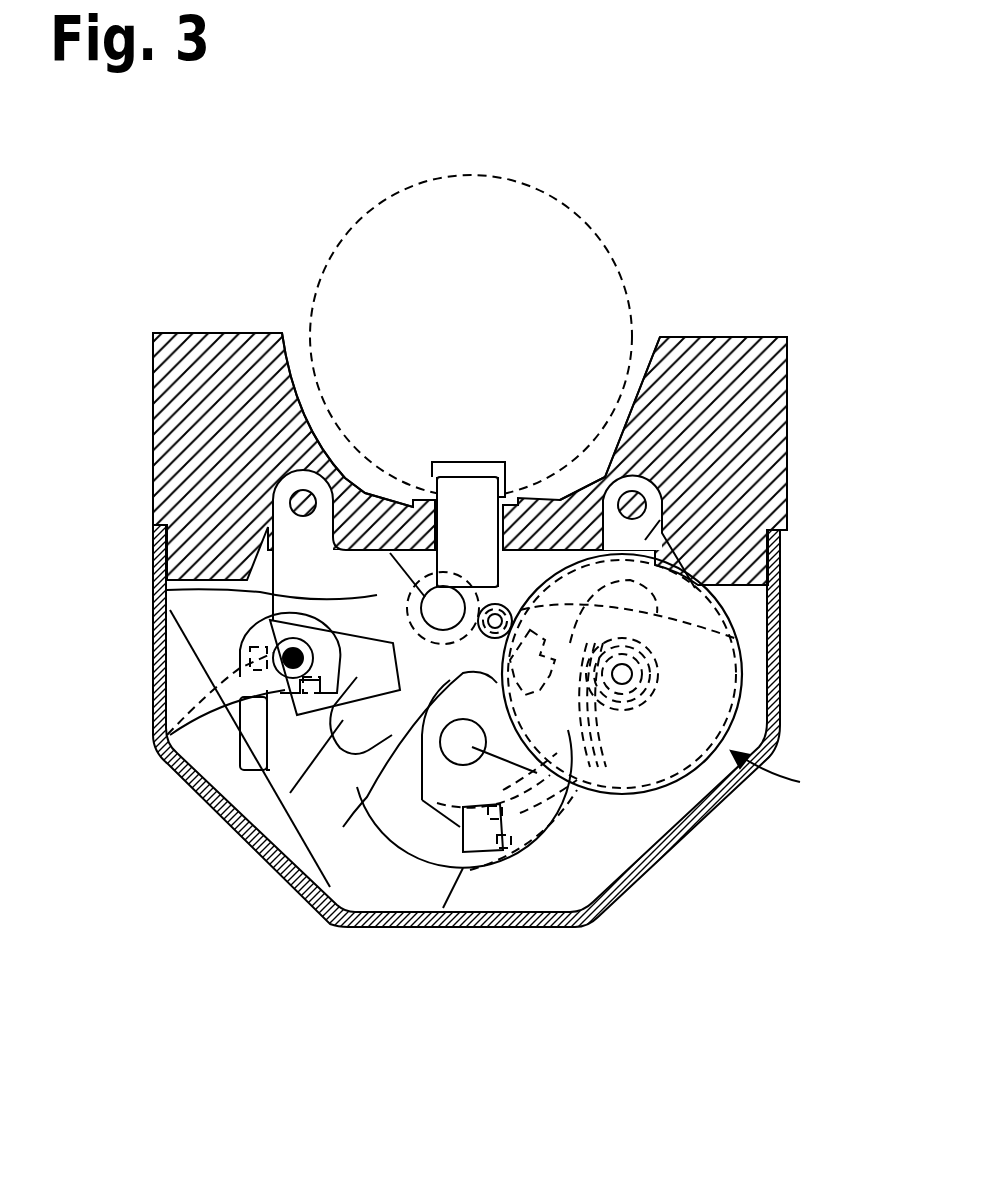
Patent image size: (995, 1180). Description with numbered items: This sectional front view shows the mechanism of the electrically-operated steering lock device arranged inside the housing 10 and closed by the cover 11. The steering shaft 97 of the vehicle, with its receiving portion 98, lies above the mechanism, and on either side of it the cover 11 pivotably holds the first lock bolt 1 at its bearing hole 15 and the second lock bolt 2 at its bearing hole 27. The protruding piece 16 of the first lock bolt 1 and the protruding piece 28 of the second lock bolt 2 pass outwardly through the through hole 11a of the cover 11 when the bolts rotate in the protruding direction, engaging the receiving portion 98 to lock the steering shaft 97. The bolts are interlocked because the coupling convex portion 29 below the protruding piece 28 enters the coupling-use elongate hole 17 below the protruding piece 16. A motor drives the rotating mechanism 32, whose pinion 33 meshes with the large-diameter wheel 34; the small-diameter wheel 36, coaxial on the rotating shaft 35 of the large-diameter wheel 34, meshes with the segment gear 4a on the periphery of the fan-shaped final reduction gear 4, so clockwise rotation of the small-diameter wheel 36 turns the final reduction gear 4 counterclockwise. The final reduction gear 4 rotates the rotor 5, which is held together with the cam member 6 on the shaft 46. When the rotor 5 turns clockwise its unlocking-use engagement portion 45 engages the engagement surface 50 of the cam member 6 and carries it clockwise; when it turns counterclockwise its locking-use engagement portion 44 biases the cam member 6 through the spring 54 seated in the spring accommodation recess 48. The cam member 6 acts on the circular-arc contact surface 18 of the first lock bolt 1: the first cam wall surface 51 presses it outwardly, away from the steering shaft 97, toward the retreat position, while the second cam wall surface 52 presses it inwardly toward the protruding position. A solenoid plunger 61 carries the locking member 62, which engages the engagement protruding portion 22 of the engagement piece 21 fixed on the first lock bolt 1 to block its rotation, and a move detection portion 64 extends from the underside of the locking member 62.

The first lock bolt 1 is at (290, 553).
The second lock bolt 2 is at (700, 495).
The final reduction gear 4 is at (657, 833).
The segment gear 4a is at (700, 803).
The rotor 5 is at (400, 827).
The cam member 6 is at (493, 780).
The housing 10 is at (205, 790).
The cover 11 is at (207, 353).
The through hole 11a is at (427, 487).
The bearing hole 15 is at (207, 400).
The protruding piece 16 is at (448, 488).
The coupling-use elongate hole 17 is at (530, 487).
The contact surface 18 is at (262, 843).
The engagement piece 21 is at (153, 582).
The engagement protruding portion 22 is at (167, 690).
The bearing hole 27 is at (740, 403).
The protruding piece 28 is at (470, 475).
The coupling convex portion 29 is at (300, 430).
The rotating mechanism 32 is at (786, 777).
The pinion 33 is at (676, 380).
The large-diameter wheel 34 is at (737, 713).
The rotating shaft 35 is at (660, 676).
The small-diameter wheel 36 is at (743, 628).
The locking-use engagement portion 44 is at (490, 853).
The unlocking-use engagement portion 45 is at (690, 565).
The shaft 46 is at (590, 840).
The spring accommodation recess 48 is at (605, 873).
The engagement surface 50 is at (768, 590).
The first cam wall surface 51 is at (413, 920).
The second cam wall surface 52 is at (340, 895).
The spring 54 is at (555, 830).
The plunger 61 is at (257, 740).
The locking member 62 is at (257, 635).
The move detection portion 64 is at (180, 773).
The steering shaft 97 is at (470, 200).
The receiving portion 98 is at (497, 600).